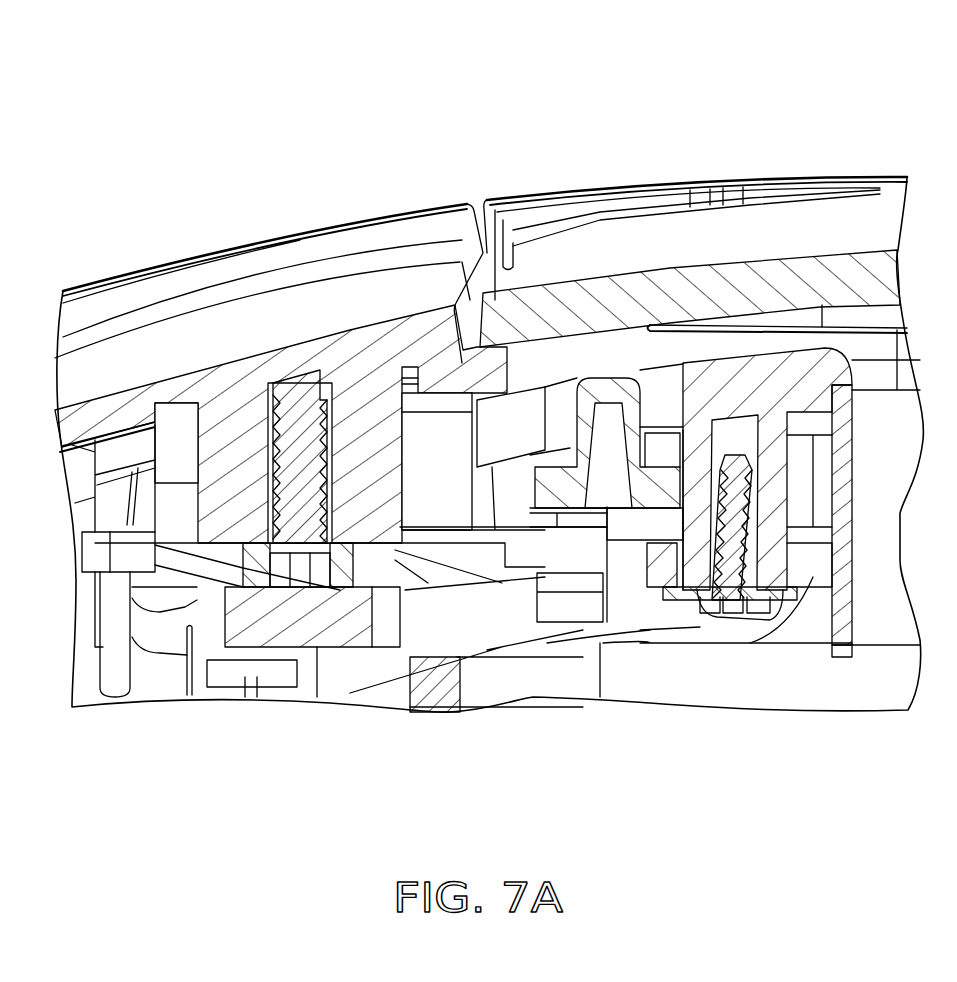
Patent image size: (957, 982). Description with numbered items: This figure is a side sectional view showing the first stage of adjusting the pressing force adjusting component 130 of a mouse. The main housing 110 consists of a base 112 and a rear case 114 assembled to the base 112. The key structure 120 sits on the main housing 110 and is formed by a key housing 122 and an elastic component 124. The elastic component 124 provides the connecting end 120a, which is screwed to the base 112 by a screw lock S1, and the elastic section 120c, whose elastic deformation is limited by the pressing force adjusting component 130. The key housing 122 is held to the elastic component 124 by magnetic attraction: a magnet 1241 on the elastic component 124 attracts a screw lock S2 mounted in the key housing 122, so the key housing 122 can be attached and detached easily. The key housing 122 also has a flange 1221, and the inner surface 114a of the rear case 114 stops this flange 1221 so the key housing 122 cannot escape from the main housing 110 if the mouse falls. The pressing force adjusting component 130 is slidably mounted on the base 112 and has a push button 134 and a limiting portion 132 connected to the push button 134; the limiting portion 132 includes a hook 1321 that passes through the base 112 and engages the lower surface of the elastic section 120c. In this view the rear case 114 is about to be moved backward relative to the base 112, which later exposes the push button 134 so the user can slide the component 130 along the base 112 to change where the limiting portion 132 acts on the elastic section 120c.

The main housing 110 is at (818, 55).
The base 112 is at (748, 340).
The rear case 114 is at (715, 237).
The inner surface 114a is at (547, 340).
The key structure 120 is at (393, 95).
The connecting end 120a is at (813, 580).
The elastic section 120c is at (592, 556).
The key housing 122 is at (325, 303).
The flange 1221 is at (532, 313).
The elastic component 124 is at (428, 540).
The magnet 1241 is at (337, 617).
The pressing force adjusting component 130 is at (660, 447).
The limiting portion 132 is at (652, 607).
The hook 1321 is at (598, 636).
The push button 134 is at (598, 388).
The screw lock S1 is at (737, 570).
The screw lock S2 is at (300, 473).